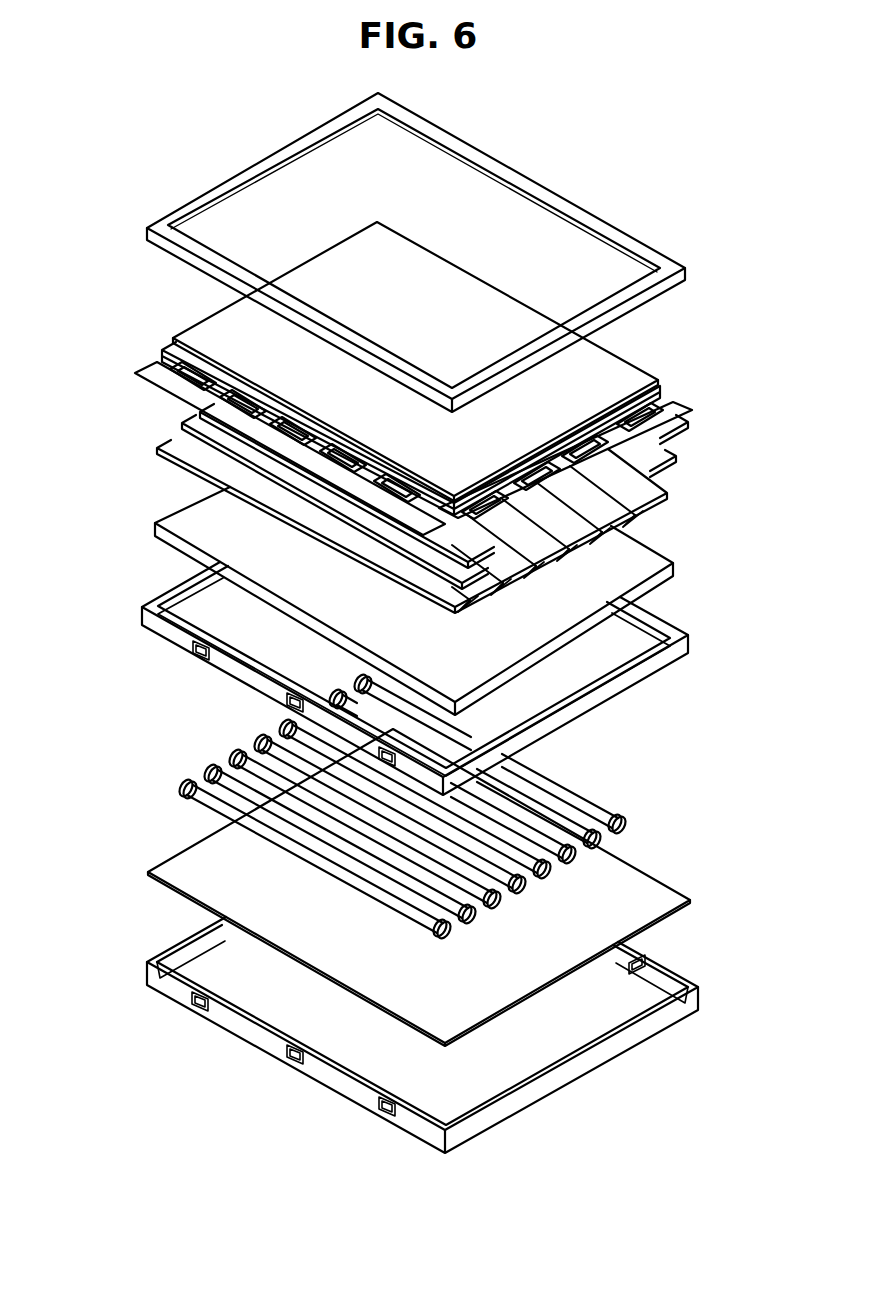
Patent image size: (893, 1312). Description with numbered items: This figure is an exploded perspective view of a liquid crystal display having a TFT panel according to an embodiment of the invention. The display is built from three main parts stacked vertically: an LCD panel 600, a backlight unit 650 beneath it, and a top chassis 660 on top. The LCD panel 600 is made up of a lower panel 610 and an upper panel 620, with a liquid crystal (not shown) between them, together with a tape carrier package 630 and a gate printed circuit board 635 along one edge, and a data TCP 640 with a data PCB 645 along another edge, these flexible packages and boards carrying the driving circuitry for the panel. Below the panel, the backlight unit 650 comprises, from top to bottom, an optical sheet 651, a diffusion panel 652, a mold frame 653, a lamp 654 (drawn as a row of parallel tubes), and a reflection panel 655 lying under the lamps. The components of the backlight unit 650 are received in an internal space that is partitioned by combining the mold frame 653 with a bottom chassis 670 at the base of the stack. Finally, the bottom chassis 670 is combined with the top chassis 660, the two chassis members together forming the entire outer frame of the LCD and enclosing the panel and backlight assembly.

The LCD panel 600 is at (150, 300).
The lower panel 610 is at (657, 392).
The upper panel 620 is at (622, 372).
The tape carrier package 630 is at (658, 427).
The gate printed circuit board 635 is at (637, 440).
The data TCP 640 is at (197, 357).
The data PCB 645 is at (170, 385).
The backlight unit 650 is at (125, 429).
The optical sheet 651 is at (657, 482).
The diffusion panel 652 is at (638, 558).
The mold frame 653 is at (667, 643).
The lamp 654 is at (582, 800).
The reflection panel 655 is at (642, 890).
The top chassis 660 is at (637, 292).
The bottom chassis 670 is at (685, 1003).